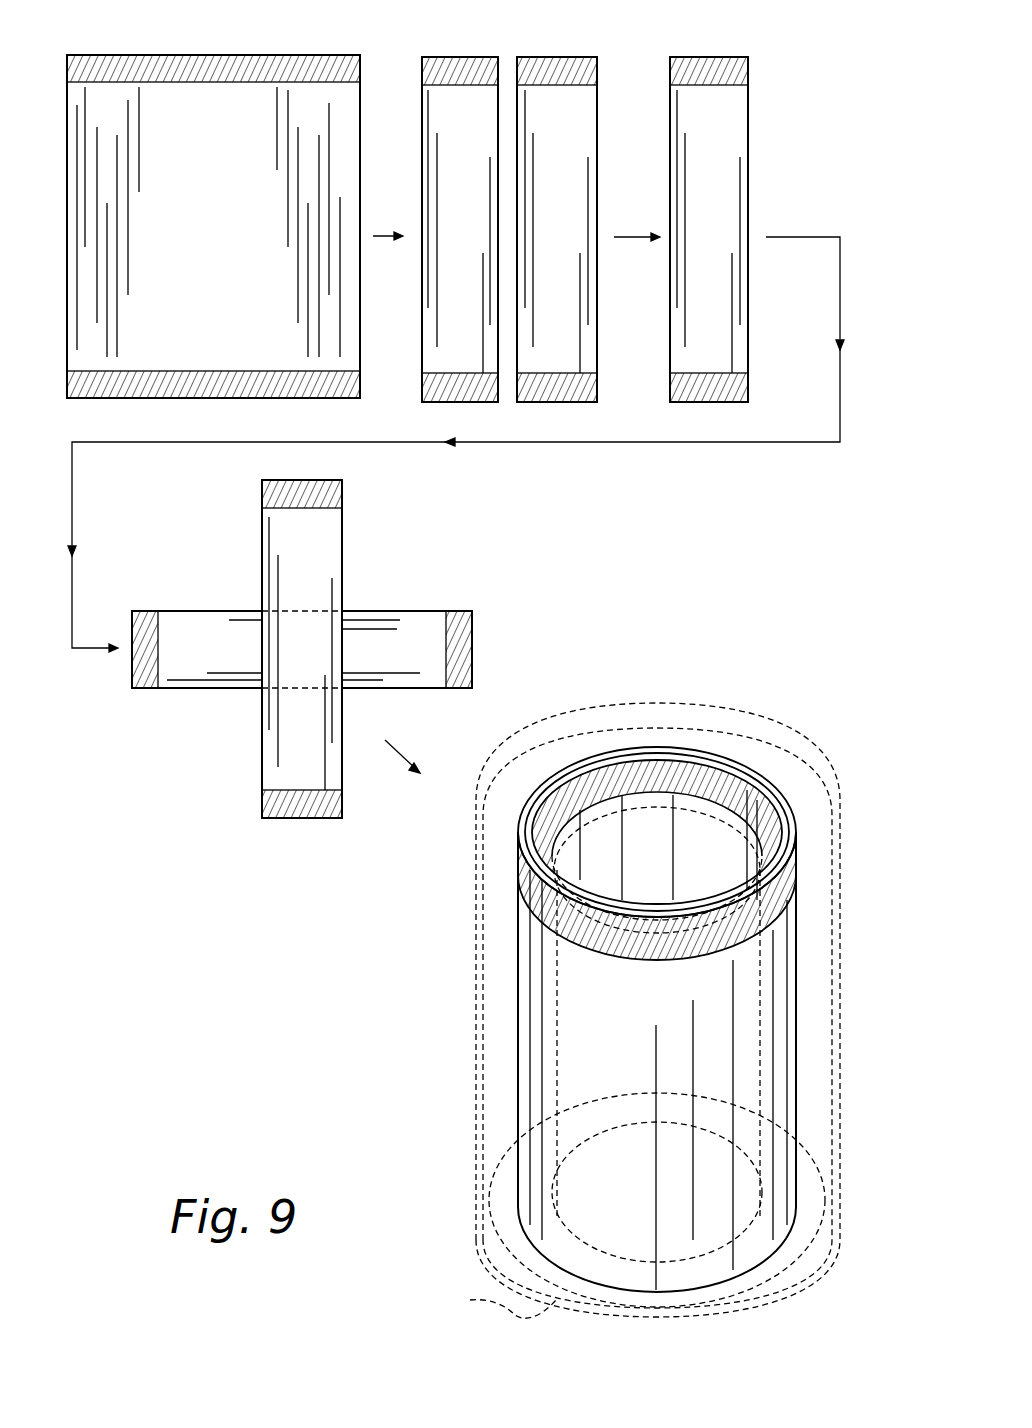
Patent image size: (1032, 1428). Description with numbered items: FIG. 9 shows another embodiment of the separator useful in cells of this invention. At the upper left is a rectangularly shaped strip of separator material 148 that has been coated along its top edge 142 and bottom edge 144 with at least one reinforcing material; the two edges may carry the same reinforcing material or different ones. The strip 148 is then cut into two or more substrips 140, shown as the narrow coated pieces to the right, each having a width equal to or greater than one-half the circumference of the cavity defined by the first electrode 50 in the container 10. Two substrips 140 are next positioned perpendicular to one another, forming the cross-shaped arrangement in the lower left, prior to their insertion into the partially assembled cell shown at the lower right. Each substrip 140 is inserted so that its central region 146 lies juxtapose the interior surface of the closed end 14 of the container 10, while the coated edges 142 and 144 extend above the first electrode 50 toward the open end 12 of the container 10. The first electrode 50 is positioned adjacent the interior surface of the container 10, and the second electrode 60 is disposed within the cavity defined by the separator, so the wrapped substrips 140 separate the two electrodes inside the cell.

The strip of separator material 148 is at (190, 50).
The substrip 140 is at (512, 482).
The top edge 142 is at (748, 76).
The bottom edge 144 is at (748, 384).
The central region 146 is at (740, 220).
The second electrode 60 is at (618, 800).
The open end 12 is at (795, 740).
The first electrode 50 is at (822, 790).
The container 10 is at (632, 1000).
The closed end 14 is at (496, 1304).